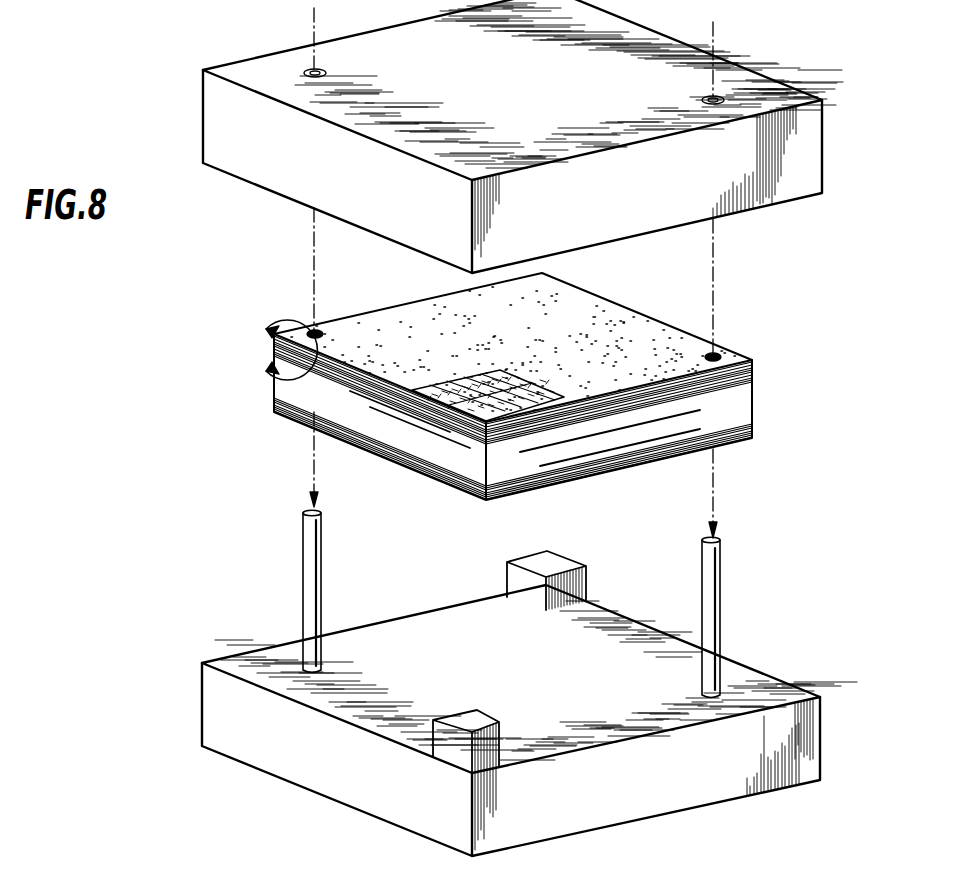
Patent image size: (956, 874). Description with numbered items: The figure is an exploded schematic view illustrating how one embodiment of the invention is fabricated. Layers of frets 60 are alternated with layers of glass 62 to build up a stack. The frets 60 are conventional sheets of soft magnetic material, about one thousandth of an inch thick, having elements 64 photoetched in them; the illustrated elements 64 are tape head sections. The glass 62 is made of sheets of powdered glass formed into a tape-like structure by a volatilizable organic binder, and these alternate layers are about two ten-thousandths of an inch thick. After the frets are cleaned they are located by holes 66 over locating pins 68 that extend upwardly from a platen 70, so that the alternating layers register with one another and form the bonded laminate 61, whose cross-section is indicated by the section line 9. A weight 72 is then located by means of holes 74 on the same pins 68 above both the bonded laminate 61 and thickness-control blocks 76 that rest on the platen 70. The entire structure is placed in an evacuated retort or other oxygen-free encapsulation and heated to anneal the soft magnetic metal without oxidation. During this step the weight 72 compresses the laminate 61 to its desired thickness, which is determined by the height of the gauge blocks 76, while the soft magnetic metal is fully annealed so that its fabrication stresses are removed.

The section line 9- 9 is at (281, 344).
The frets 60 is at (488, 375).
The bonded laminate 61 is at (483, 383).
The glass 62 is at (372, 325).
The elements 64 is at (515, 383).
The holes 66 is at (314, 330).
The locating pins 68 is at (303, 540).
The platen 70 is at (768, 742).
The weight 72 is at (736, 76).
The holes 74 is at (312, 66).
The thickness-control blocks 76 is at (580, 574).